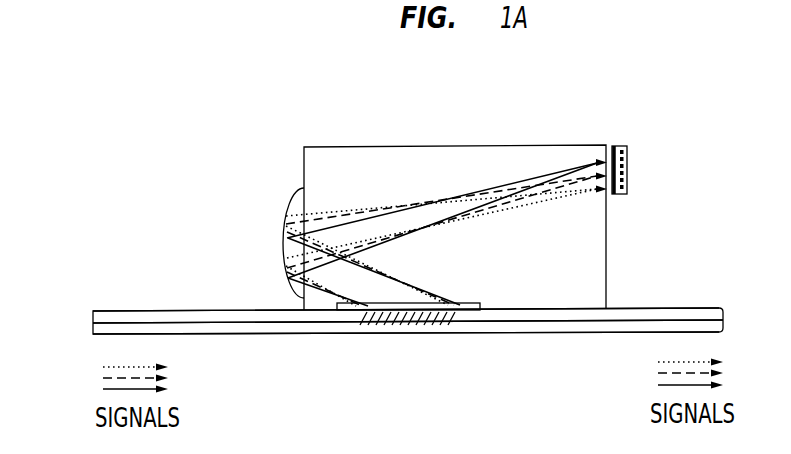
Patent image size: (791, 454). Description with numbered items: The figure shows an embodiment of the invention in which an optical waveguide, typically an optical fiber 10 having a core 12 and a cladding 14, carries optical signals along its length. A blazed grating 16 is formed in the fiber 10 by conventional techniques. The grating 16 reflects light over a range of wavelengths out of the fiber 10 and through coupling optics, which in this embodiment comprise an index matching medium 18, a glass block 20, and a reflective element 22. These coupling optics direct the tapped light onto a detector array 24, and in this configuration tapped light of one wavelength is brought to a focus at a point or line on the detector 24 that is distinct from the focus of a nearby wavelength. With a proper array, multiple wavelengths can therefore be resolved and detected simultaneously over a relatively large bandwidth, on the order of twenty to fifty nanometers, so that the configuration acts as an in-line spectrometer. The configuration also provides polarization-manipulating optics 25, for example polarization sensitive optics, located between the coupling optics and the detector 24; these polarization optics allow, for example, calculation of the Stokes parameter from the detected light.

The optical fiber 10 is at (254, 335).
The core 12 is at (89, 312).
The cladding 14 is at (89, 336).
The blazed grating 16 is at (443, 340).
The index matching medium 18 is at (480, 304).
The glass block 20 is at (607, 262).
The reflective element 22 is at (285, 252).
The detector array 24 is at (628, 193).
The polarization-manipulating optics 25 is at (622, 148).